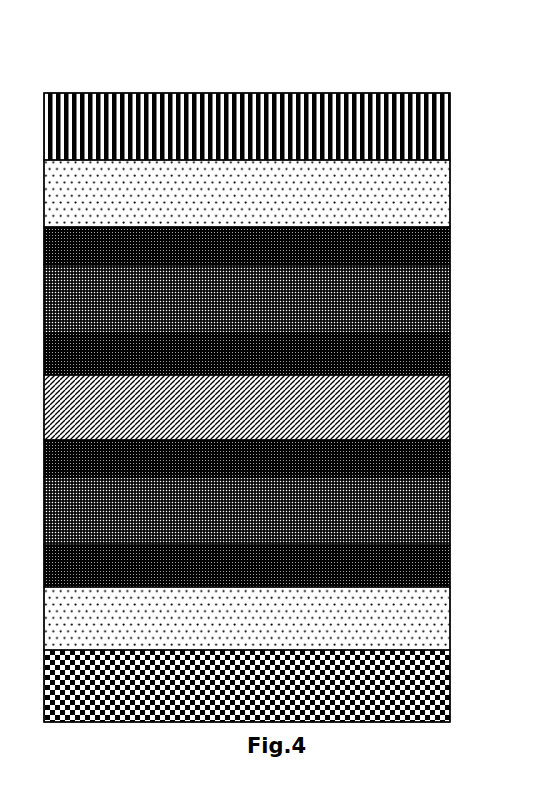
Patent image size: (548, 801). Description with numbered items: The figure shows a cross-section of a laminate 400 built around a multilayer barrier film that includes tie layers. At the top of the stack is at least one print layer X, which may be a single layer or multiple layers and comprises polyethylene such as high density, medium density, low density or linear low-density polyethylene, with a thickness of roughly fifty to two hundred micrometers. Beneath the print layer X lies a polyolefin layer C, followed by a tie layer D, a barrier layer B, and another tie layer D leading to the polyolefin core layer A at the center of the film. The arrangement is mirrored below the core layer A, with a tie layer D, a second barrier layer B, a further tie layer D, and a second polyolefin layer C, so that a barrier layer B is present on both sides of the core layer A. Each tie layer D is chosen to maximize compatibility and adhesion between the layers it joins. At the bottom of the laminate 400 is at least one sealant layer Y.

The laminate 400 is at (266, 74).
The print layer X is at (451, 127).
The polyolefin layer C is at (451, 195).
The tie layer D is at (451, 245).
The barrier layer B is at (451, 302).
The polyolefin core layer A is at (451, 405).
The sealant layer Y is at (451, 684).